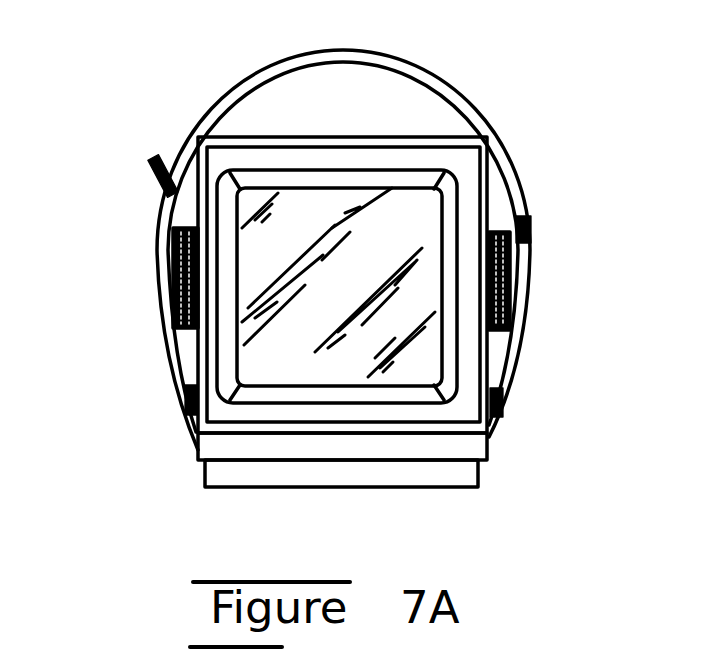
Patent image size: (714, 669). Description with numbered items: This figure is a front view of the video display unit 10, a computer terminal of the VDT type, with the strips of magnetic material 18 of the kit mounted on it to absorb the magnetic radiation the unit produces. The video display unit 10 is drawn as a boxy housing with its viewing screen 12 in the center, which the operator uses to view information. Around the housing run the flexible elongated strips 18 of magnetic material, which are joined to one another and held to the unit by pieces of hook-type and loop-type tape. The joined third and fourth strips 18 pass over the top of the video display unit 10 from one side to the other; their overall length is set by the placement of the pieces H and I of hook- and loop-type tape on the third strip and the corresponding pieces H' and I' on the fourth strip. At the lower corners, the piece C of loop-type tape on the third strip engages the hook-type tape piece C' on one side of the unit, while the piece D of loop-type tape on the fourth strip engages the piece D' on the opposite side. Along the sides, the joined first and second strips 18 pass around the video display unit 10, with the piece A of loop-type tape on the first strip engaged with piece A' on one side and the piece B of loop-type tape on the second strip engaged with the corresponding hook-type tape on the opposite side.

The video display unit 10 is at (195, 455).
The viewing screen 12 is at (337, 200).
The strips of magnetic material 18 is at (318, 64).
The piece H of hook- and loop-type tape H is at (152, 158).
The piece I of hook- and loop-type tape I is at (545, 232).
The piece A of loop-type tape A is at (526, 308).
The piece B of loop-type tape B is at (165, 318).
The piece C of loop-type tape C is at (170, 402).
The piece D of loop-type tape D is at (524, 392).